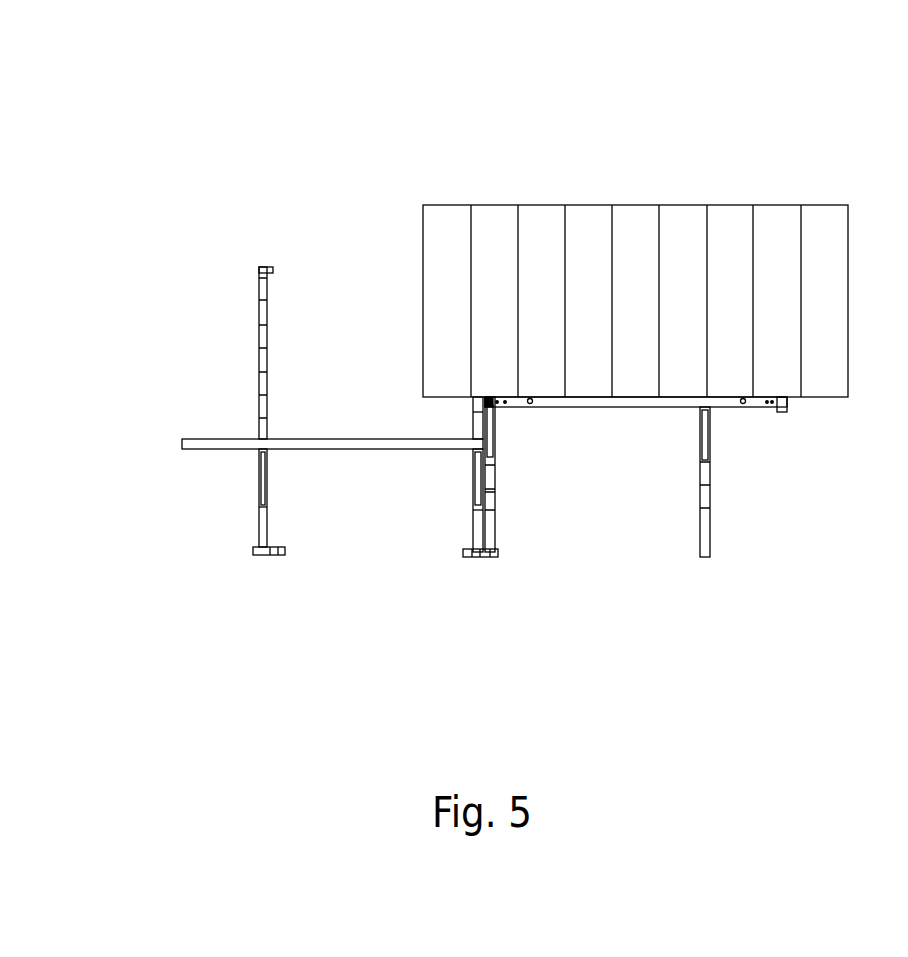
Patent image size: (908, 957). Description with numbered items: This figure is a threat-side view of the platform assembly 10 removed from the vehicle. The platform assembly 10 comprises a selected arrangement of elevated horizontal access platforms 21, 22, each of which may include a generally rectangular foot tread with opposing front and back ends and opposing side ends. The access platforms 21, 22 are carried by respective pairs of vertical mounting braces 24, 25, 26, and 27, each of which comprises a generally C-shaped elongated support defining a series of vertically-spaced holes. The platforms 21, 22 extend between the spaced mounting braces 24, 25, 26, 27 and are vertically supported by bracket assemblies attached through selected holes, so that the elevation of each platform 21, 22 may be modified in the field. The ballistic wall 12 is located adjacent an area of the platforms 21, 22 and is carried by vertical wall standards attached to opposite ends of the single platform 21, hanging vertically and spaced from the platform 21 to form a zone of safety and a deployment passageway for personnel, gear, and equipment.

The platform assembly 10 is at (371, 158).
The ballistic wall 12 is at (680, 255).
The access platform 21 is at (617, 407).
The access platform 22 is at (203, 439).
The vertical mounting brace 24 is at (711, 537).
The vertical mounting brace 25 is at (495, 530).
The vertical mounting brace 26 is at (475, 530).
The vertical mounting brace 27 is at (259, 308).